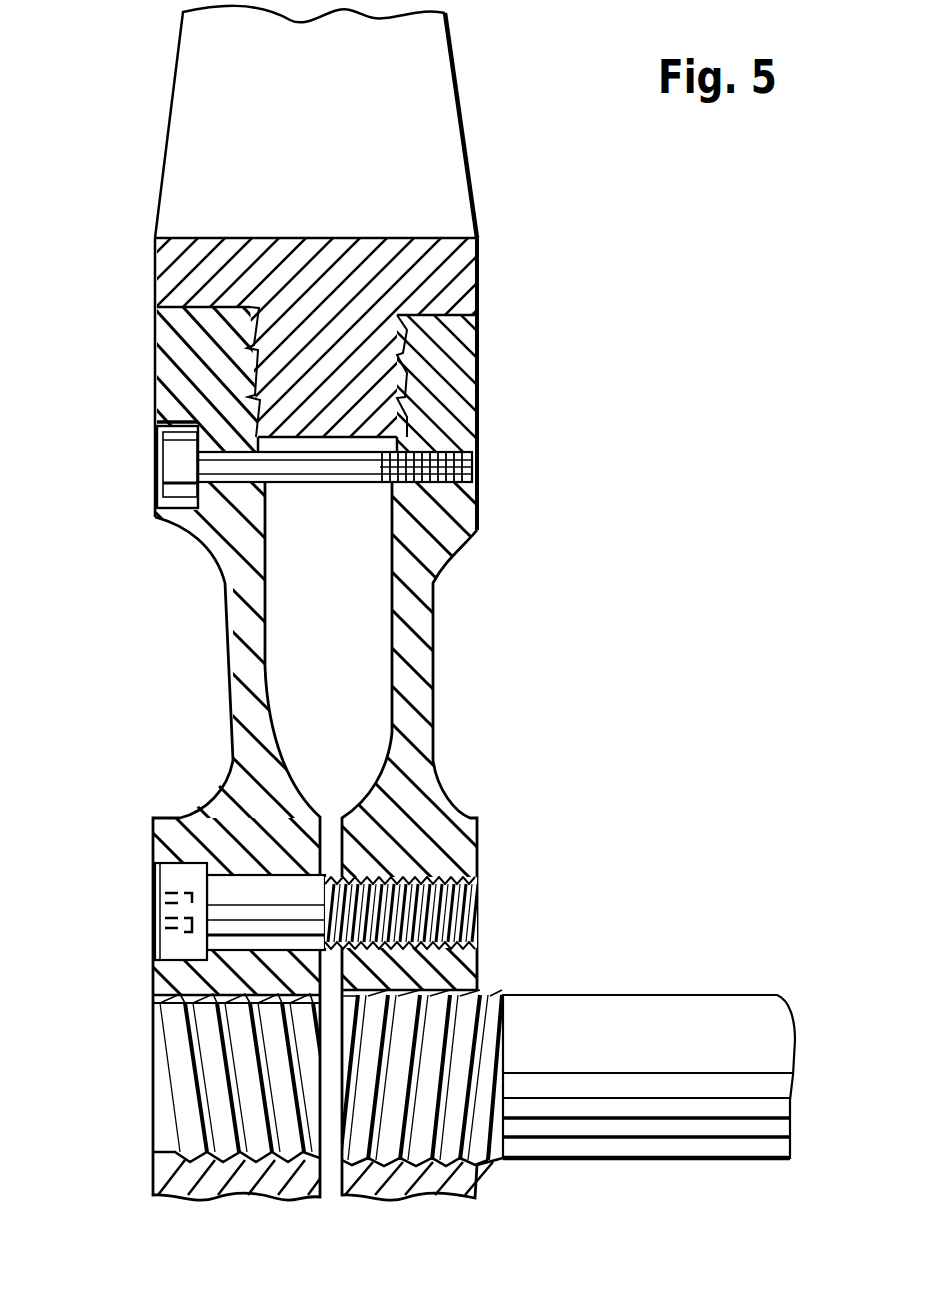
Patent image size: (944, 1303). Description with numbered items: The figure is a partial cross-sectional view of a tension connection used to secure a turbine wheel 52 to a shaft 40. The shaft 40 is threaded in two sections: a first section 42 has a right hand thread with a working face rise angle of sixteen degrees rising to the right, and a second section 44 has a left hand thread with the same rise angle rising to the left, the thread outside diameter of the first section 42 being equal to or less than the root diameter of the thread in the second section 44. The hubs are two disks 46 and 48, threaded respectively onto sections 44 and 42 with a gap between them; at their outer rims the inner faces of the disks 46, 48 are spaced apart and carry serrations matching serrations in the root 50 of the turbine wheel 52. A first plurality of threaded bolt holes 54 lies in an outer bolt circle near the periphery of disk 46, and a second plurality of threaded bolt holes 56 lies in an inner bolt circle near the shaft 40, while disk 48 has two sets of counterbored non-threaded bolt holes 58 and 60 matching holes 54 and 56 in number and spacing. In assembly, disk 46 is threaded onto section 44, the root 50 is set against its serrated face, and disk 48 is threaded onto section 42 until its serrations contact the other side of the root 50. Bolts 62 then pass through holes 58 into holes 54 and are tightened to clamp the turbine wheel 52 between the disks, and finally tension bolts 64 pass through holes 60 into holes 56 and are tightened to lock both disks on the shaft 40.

The shaft 40 is at (635, 1003).
The first section 42 is at (208, 1055).
The second section 44 is at (453, 1038).
The disk 46 is at (453, 800).
The disk 48 is at (207, 800).
The root 50 is at (342, 373).
The turbine wheel 52 is at (420, 108).
The threaded bolt holes 54 is at (478, 465).
The threaded bolt holes 56 is at (478, 902).
The counterbored non-threaded bolt holes 58 is at (153, 443).
The counterbored non-threaded bolt holes 60 is at (152, 918).
The bolts 62 is at (163, 465).
The tension bolts 64 is at (167, 882).